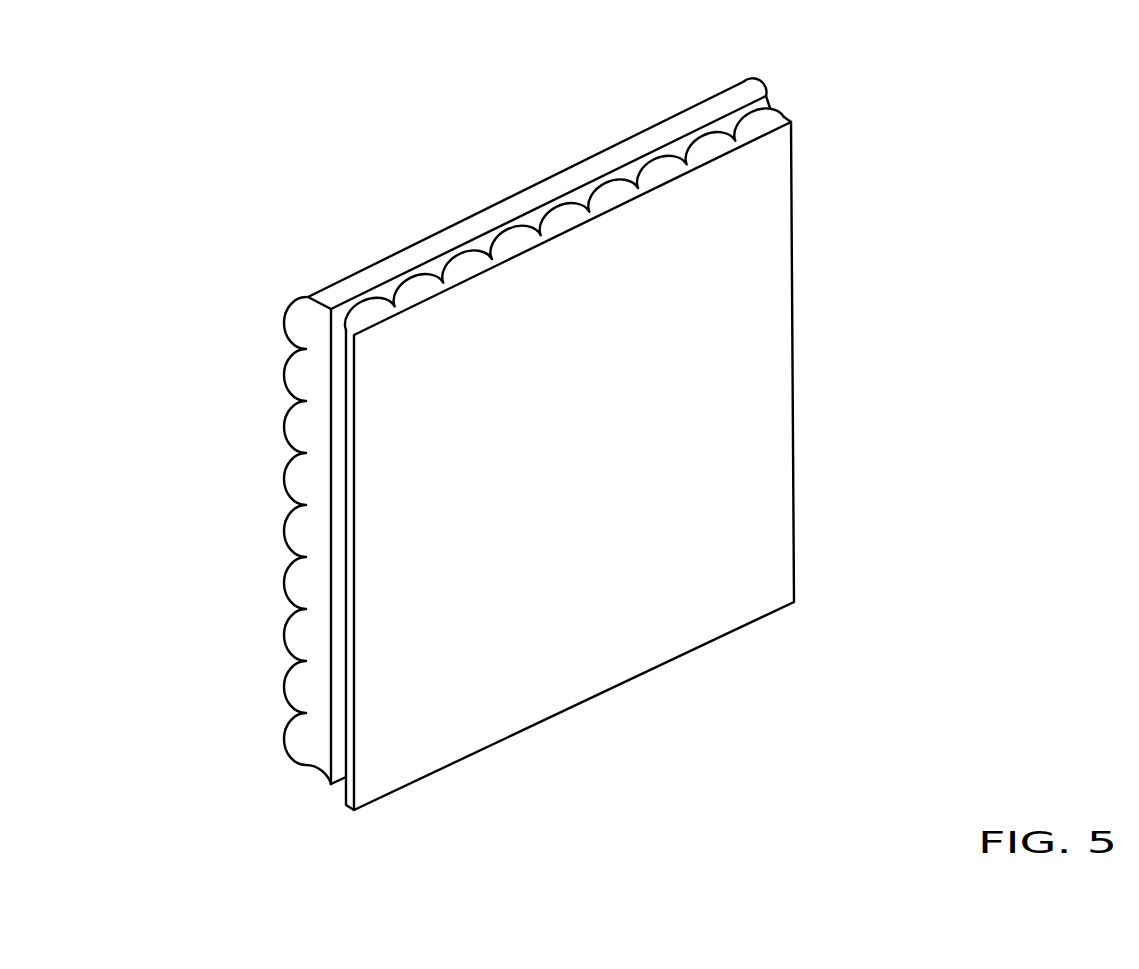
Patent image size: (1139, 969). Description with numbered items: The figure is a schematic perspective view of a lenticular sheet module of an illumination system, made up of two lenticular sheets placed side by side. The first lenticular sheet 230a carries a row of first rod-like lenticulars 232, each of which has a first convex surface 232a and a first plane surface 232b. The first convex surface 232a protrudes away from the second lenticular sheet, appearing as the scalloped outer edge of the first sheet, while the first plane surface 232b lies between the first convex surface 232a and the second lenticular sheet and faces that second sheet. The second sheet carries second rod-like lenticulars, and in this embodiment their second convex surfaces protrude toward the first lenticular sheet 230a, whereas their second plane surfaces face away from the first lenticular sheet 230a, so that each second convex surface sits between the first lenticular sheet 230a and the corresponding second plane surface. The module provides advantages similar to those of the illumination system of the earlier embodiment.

The first lenticular sheet 230a is at (437, 472).
The first rod-like lenticular 232 is at (297, 323).
The first convex surface 232a is at (218, 540).
The first plane surface 232b is at (342, 719).